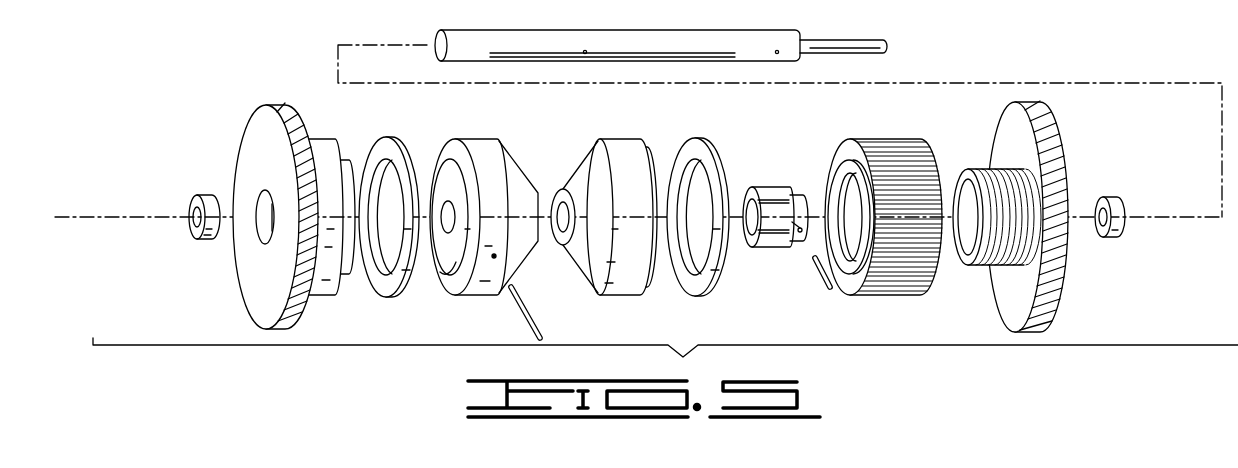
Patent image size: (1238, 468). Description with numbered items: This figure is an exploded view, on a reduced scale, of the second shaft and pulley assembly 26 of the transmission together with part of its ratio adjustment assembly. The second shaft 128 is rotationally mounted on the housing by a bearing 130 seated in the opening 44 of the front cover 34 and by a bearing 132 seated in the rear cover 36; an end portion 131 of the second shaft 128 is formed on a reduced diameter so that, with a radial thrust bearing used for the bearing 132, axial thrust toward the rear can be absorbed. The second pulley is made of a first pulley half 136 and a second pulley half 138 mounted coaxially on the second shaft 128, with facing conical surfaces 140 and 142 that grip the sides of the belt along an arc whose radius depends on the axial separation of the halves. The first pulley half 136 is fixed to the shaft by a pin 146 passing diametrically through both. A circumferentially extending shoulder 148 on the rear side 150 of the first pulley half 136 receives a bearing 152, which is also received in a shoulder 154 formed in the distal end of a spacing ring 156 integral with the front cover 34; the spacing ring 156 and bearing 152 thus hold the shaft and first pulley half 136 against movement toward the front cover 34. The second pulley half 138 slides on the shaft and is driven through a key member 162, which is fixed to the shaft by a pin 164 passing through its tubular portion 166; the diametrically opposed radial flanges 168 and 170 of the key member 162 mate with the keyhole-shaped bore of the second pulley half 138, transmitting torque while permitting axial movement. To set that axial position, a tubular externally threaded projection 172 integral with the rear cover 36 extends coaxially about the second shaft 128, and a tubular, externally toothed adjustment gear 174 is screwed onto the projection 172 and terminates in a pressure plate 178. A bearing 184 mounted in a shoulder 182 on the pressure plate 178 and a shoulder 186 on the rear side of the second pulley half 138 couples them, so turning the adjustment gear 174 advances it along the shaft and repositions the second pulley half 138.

The second shaft and pulley assembly 26 is at (618, 30).
The second shaft 128 is at (647, 40).
The end portion of the second shaft 131 is at (845, 45).
The front cover 34 is at (251, 215).
The rear cover 36 is at (1053, 125).
The opening 44 is at (260, 228).
The bearing 130 is at (197, 192).
The bearing 132 is at (1118, 200).
The first pulley half 136 is at (473, 213).
The second pulley half 138 is at (601, 193).
The conical surface 140 is at (515, 175).
The conical surface 142 is at (573, 178).
The pin 146 is at (530, 320).
The circumferentially extending shoulder 148 is at (453, 162).
The rear side of the first pulley half 150 is at (445, 266).
The bearing 152 is at (398, 142).
The circumferentially extending shoulder 154 is at (345, 175).
The spacing ring 156 is at (334, 194).
The key member 162 is at (770, 220).
The pin 164 is at (820, 275).
The tubular portion 166 is at (800, 232).
The flange 168 is at (768, 190).
The flange 170 is at (785, 240).
The externally threaded projection 172 is at (985, 190).
The adjustment gear 174 is at (878, 193).
The pressure plate 178 is at (838, 165).
The circumferentially extending shoulder 182 is at (858, 170).
The bearing 184 is at (700, 137).
The circumferentially extending shoulder 186 is at (647, 160).